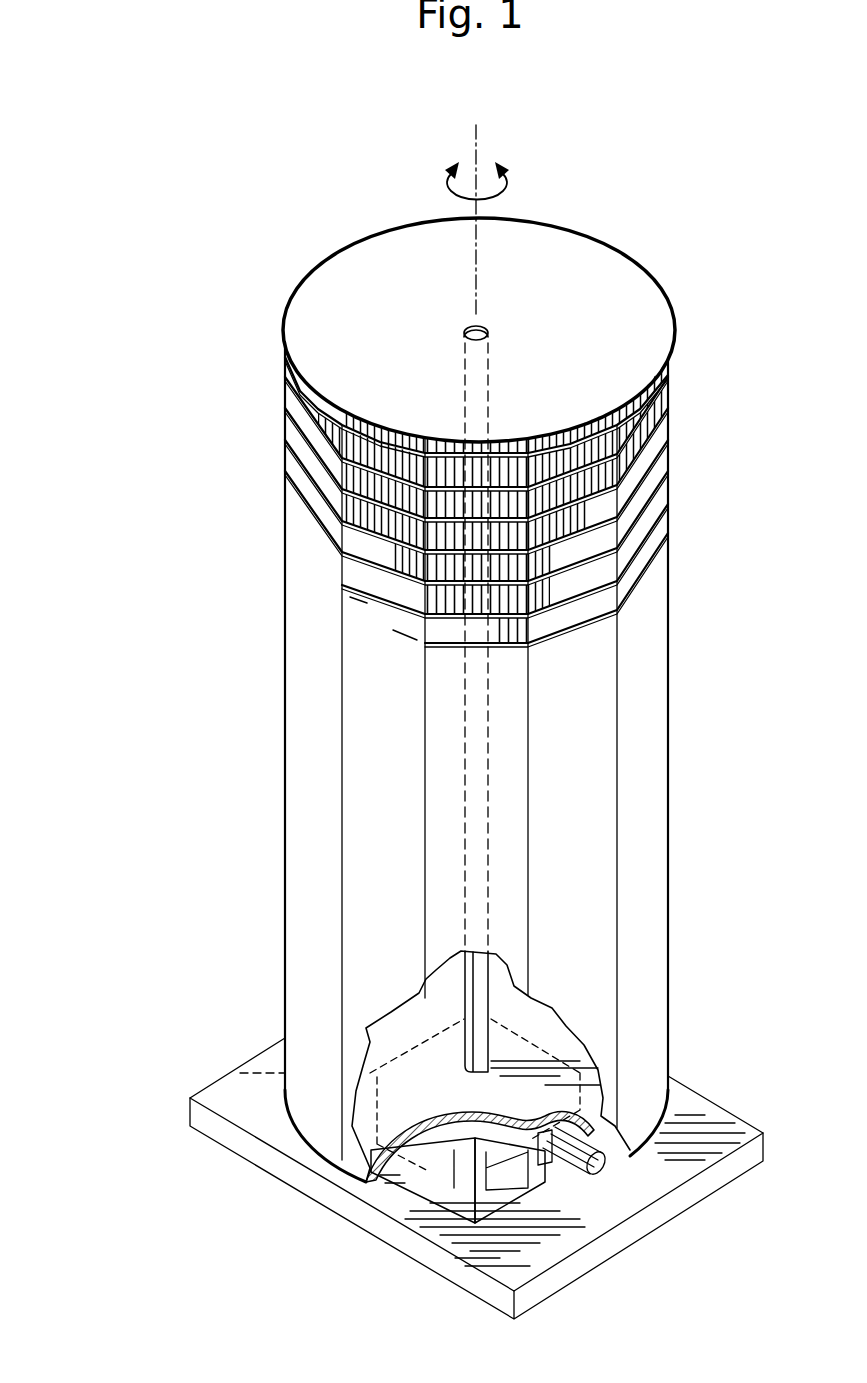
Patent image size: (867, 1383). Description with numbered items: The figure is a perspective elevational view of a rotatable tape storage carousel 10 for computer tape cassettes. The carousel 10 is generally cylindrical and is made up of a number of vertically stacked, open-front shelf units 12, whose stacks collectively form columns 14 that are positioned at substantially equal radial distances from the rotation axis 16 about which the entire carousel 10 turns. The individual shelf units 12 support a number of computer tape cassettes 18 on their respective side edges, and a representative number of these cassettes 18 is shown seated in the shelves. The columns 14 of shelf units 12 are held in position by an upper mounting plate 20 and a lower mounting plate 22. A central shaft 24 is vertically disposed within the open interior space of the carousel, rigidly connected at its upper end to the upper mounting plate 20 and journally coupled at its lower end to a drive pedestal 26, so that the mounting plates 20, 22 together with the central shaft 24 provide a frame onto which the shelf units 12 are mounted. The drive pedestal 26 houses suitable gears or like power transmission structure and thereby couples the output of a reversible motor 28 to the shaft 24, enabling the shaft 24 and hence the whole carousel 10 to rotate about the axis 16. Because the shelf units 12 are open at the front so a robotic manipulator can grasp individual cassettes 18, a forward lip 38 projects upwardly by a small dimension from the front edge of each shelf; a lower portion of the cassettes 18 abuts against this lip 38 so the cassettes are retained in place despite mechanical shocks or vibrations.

The tape storage carousel 10 is at (138, 800).
The shelf units 12 is at (278, 457).
The columns 14 is at (297, 673).
The rotation axis 16 is at (478, 252).
The tape cassettes 18 is at (408, 458).
The upper mounting plate 20 is at (563, 321).
The lower mounting plate 22 is at (331, 1158).
The central shaft 24 is at (466, 1003).
The drive pedestal 26 is at (429, 1160).
The reversible motor 28 is at (634, 1148).
The forward lip 38 is at (513, 522).